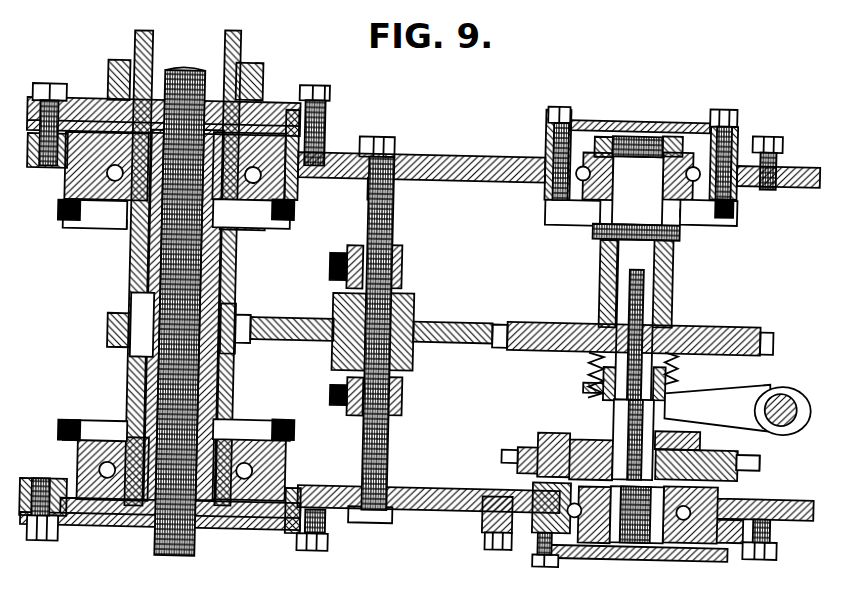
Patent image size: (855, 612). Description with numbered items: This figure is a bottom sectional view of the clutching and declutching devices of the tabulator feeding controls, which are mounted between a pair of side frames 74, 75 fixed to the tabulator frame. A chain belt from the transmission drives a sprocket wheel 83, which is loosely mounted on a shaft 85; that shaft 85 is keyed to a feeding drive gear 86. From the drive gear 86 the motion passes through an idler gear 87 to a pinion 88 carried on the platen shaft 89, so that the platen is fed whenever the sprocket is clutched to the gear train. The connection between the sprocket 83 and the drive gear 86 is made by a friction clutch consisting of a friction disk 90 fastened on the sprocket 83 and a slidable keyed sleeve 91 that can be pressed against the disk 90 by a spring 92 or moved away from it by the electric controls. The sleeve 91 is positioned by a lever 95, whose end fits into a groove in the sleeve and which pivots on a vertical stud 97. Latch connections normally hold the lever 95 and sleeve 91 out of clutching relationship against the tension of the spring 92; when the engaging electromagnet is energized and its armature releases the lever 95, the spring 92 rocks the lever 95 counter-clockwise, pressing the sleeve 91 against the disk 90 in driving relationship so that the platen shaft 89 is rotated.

The side frame 74 is at (447, 165).
The side frame 75 is at (444, 497).
The sprocket wheel 83 is at (763, 455).
The shaft 85 is at (644, 253).
The feeding drive gear 86 is at (719, 333).
The idler gear 87 is at (446, 330).
The pinion 88 is at (252, 326).
The platen shaft 89 is at (177, 536).
The friction disk 90 is at (673, 434).
The slidable keyed sleeve 91 is at (680, 379).
The spring 92 is at (605, 358).
The lever 95 is at (754, 389).
The vertical stud 97 is at (787, 390).